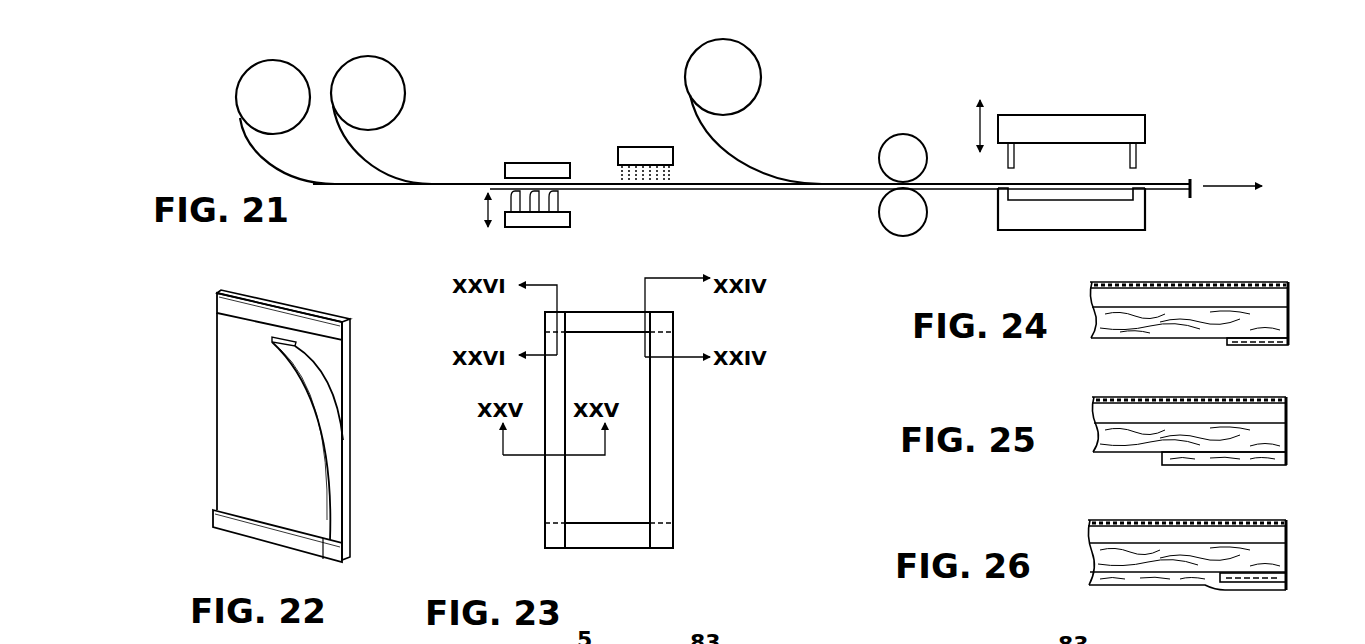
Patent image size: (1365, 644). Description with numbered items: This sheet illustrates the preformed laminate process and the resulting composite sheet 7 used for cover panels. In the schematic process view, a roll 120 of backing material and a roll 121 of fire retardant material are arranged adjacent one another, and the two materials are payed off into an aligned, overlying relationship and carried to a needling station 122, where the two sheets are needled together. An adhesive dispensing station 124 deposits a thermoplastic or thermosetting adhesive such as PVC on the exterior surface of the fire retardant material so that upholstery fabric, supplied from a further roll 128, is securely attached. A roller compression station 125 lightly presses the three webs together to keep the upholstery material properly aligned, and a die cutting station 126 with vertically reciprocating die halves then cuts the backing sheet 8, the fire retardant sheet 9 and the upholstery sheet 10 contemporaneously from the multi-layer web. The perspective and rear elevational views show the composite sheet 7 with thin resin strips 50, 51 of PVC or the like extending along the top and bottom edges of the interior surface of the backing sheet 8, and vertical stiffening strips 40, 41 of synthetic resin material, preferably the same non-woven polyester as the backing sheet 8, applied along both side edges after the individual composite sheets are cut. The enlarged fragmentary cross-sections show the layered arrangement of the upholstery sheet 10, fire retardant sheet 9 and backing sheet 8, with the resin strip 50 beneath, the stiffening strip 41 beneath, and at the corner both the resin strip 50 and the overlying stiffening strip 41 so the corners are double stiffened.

In FIG. 21, the roll of backing material 120 is at (236, 100).
In FIG. 21, the roll of fire retardant material 121 is at (406, 94).
In FIG. 21, the needling station 122 is at (576, 217).
In FIG. 21, the adhesive dispensing station 124 is at (643, 146).
In FIG. 21, the roller compression station 125 is at (884, 140).
In FIG. 21, the die cutting station 126 is at (1132, 115).
In FIG. 21, the supply roll 128 is at (686, 73).
In FIG. 22, the composite sheet 7 is at (353, 321).
In FIG. 22, the backing sheet 8 is at (235, 412).
In FIG. 24, the backing sheet 8 is at (1292, 322).
In FIG. 25, the backing sheet 8 is at (1292, 438).
In FIG. 26, the backing sheet 8 is at (1290, 562).
In FIG. 24, the fire retardant sheet 9 is at (1292, 298).
In FIG. 25, the fire retardant sheet 9 is at (1292, 408).
In FIG. 26, the fire retardant sheet 9 is at (1292, 531).
In FIG. 24, the upholstery sheet 10 is at (1292, 287).
In FIG. 25, the upholstery sheet 10 is at (1292, 399).
In FIG. 26, the upholstery sheet 10 is at (1292, 522).
In FIG. 22, the stiffening strip 40 is at (308, 396).
In FIG. 23, the stiffening strip 40 is at (665, 482).
In FIG. 23, the stiffening strip 41 is at (548, 481).
In FIG. 25, the stiffening strip 41 is at (1160, 459).
In FIG. 26, the stiffening strip 41 is at (1240, 589).
In FIG. 22, the resin strip 50 is at (248, 308).
In FIG. 23, the resin strip 50 is at (612, 318).
In FIG. 24, the resin strip 50 is at (1225, 343).
In FIG. 26, the resin strip 50 is at (1290, 579).
In FIG. 22, the resin strip 51 is at (245, 528).
In FIG. 23, the resin strip 51 is at (617, 540).